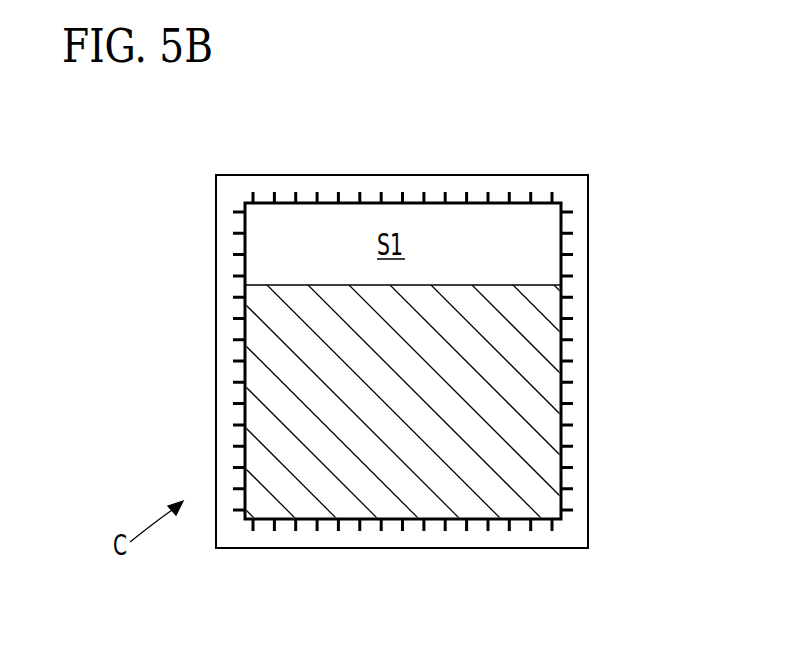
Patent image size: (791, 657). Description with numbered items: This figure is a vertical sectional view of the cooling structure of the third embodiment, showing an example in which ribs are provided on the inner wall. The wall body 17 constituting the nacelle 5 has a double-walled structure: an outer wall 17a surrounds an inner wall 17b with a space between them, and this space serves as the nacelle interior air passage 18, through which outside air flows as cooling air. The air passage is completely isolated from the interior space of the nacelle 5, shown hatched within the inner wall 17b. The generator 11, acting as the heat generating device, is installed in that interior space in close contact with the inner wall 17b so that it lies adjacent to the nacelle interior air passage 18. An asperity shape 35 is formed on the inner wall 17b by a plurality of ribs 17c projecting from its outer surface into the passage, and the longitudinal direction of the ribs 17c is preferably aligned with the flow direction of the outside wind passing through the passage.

The nacelle 5 is at (216, 214).
The generator 11 is at (390, 490).
The wall body 17 is at (455, 96).
The outer wall 17a is at (340, 175).
The inner wall 17b is at (413, 198).
The ribs 17c is at (563, 233).
The asperity shape 35 is at (490, 359).
The nacelle interior air passage 18 is at (520, 188).